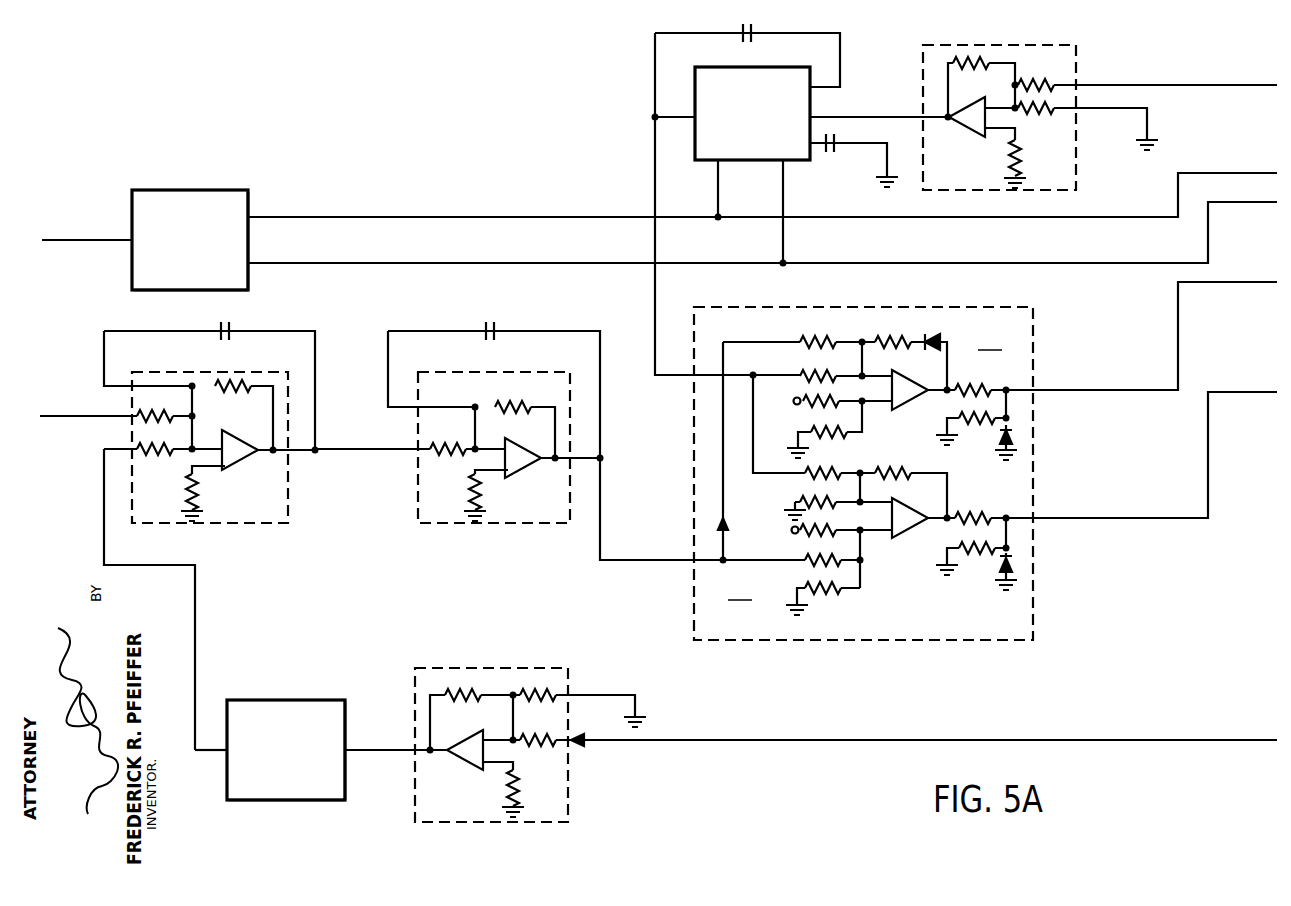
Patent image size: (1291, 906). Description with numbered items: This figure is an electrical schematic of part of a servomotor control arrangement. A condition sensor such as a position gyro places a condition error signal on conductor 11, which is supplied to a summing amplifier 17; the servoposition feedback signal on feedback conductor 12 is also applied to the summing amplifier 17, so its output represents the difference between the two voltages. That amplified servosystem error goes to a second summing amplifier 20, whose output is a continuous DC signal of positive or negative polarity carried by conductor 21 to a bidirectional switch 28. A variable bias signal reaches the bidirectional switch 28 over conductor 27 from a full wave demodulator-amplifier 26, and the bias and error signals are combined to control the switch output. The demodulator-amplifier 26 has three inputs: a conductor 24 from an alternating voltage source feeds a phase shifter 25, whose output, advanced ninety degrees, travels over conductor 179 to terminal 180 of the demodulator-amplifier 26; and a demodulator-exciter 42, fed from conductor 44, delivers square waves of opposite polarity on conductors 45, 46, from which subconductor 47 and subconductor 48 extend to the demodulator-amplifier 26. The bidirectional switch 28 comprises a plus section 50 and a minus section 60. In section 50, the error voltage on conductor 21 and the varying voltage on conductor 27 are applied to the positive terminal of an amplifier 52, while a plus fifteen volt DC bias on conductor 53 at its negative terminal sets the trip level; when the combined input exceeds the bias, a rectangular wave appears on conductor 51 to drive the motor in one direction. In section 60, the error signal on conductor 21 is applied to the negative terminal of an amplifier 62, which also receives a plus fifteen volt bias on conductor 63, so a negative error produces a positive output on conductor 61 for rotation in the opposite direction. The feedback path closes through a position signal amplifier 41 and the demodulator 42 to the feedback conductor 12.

The conductor 11 is at (55, 416).
The feedback conductor 12 is at (104, 500).
The summing amplifier 17 is at (288, 503).
The second summing amplifier 20 is at (418, 503).
The conductor 21 is at (648, 560).
The conductor 24 is at (1195, 85).
The phase shifter 25 is at (1076, 145).
The full wave demodulator-amplifier 26 is at (783, 67).
The conductor 27 is at (657, 295).
The bidirectional switch 28 is at (694, 428).
The position signal amplifier 41 is at (508, 668).
The demodulator-exciter 42 is at (200, 190).
The conductor 44 is at (65, 240).
The conductor 45 is at (315, 217).
The conductor 46 is at (352, 263).
The subconductor 47 is at (718, 208).
The subconductor 48 is at (783, 181).
The section 50 is at (875, 445).
The conductor 51 is at (1065, 390).
The amplifier 52 is at (898, 378).
The conductor 53 is at (797, 405).
The section 60 is at (878, 495).
The conductor 61 is at (1140, 518).
The amplifier 62 is at (898, 507).
The conductor 63 is at (792, 533).
The conductor 179 is at (825, 117).
The terminal 180 is at (816, 121).